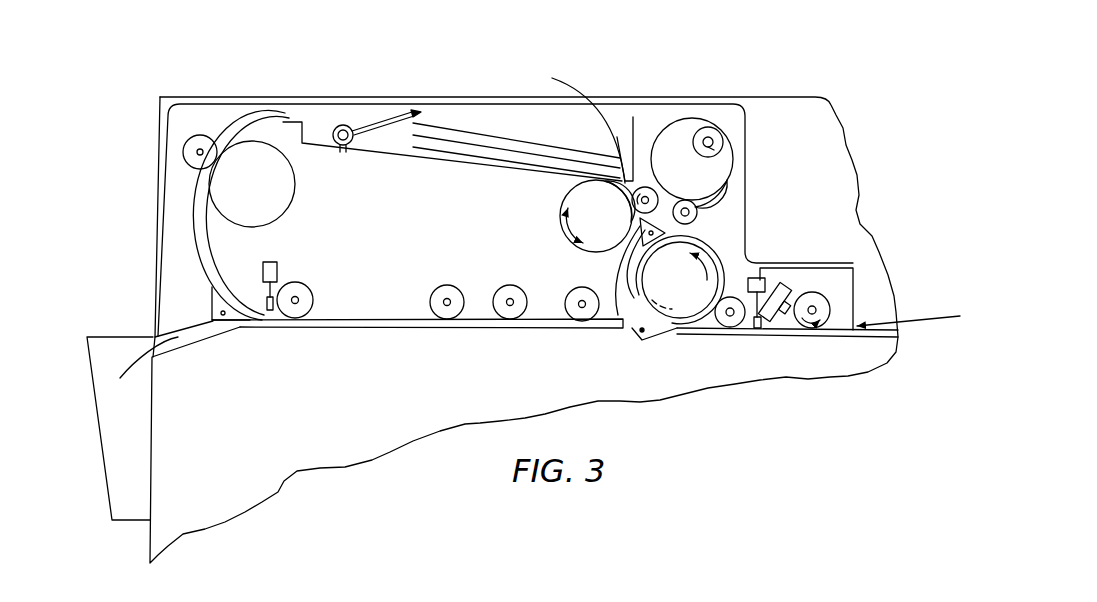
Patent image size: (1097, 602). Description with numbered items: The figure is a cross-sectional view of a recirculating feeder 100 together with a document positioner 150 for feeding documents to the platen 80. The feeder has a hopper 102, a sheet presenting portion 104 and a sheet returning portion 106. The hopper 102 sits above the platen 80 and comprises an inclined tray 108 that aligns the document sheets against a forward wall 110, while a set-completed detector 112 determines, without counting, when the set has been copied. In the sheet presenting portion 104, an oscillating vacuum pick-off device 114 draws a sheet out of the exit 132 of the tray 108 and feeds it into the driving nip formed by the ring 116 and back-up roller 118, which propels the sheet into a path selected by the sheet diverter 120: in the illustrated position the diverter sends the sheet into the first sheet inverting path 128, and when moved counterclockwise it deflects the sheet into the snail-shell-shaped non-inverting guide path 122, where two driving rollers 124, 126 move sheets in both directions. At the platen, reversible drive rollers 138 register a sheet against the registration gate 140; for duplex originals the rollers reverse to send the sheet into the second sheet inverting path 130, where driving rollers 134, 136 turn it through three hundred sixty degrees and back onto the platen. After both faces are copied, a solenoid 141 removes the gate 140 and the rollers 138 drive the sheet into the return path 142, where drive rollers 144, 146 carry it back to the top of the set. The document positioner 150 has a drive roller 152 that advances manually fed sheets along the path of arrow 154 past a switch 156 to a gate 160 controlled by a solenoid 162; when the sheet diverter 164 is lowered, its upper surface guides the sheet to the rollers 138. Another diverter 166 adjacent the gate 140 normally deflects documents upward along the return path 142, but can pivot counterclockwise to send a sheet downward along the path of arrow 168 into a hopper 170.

The platen 80 is at (384, 319).
The recirculating feeder 100 is at (150, 166).
The hopper 102 is at (441, 163).
The sheet presenting portion 104 is at (548, 216).
The sheet returning portion 106 is at (265, 243).
The tray 108 is at (388, 153).
The forward wall 110 is at (633, 117).
The set-completed detector 112 is at (340, 144).
The oscillating vacuum pick-off device 114 is at (563, 197).
The ring 116 is at (615, 196).
The back-up roller 118 is at (650, 195).
The sheet diverter 120 is at (641, 234).
The non-inverting guide path 122 is at (727, 164).
The driving roller 124 is at (694, 206).
The driving roller 126 is at (705, 132).
The first sheet inverting path 128 is at (642, 267).
The second sheet inverting path 130 is at (713, 257).
The exit 132 is at (576, 120).
The driving roller 134 is at (674, 233).
The driving roller 136 is at (722, 323).
The reversible drive rollers 138 is at (307, 288).
The registration gate 140 is at (272, 310).
The solenoid 141 is at (278, 270).
The sheet inverting path 142 is at (200, 233).
The drive roller 144 is at (187, 138).
The drive roller 146 is at (275, 187).
The document positioner 150 is at (859, 275).
The drive roller 152 is at (830, 312).
The arrow 154 is at (927, 322).
The switch 156 is at (778, 316).
The gate 160 is at (760, 330).
The solenoid 162 is at (760, 276).
The sheet diverter 164 is at (643, 335).
The diverter 166 is at (222, 304).
The arrow 168 is at (110, 387).
The hopper 170 is at (107, 477).